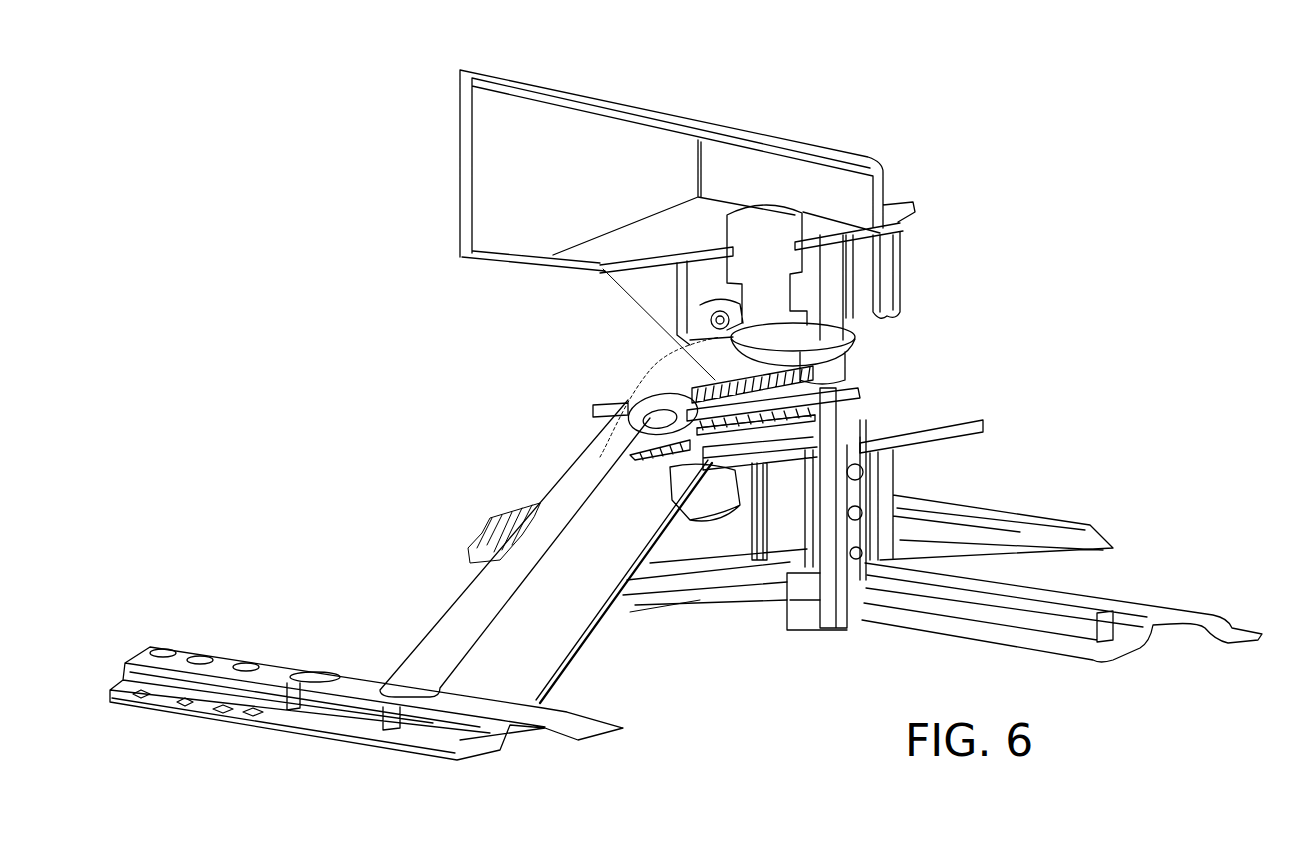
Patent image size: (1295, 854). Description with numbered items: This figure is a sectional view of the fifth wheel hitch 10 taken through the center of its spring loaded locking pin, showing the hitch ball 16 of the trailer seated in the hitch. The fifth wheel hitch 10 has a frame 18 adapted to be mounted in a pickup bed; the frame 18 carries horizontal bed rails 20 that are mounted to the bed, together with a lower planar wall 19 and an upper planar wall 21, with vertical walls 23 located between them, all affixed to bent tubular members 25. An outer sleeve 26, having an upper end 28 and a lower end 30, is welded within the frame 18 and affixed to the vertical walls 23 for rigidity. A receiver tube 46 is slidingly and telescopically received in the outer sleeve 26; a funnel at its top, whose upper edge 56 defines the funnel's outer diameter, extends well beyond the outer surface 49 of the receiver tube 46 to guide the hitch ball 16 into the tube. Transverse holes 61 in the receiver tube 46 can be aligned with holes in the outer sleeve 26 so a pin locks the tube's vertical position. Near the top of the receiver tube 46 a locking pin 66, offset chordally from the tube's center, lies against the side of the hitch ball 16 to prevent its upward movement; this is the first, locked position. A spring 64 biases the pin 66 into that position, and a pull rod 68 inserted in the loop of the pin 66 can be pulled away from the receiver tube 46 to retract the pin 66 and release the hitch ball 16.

The fifth wheel hitch 10 is at (1152, 414).
The hitch ball 16 is at (830, 362).
The frame 18 is at (484, 596).
The lower planar wall 19 is at (634, 588).
The horizontal bed rails 20 is at (184, 652).
The upper planar wall 21 is at (925, 423).
The vertical walls 23 is at (697, 542).
The bent tubular members 25 is at (447, 640).
The outer sleeve 26 is at (812, 552).
The upper end 28 is at (867, 433).
The lower end 30 is at (823, 568).
The receiver tube 46 is at (807, 617).
The outer surface 49 is at (800, 428).
The upper edge 56 is at (852, 357).
The transverse holes 61 is at (858, 468).
The spring 64 is at (725, 387).
The pin 66 is at (850, 393).
The pull rod 68 is at (608, 405).